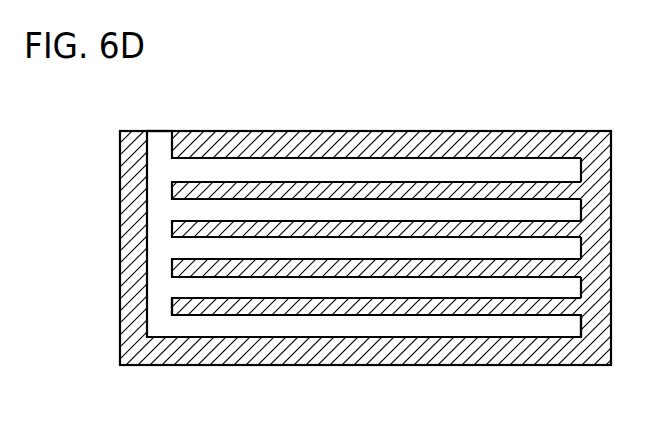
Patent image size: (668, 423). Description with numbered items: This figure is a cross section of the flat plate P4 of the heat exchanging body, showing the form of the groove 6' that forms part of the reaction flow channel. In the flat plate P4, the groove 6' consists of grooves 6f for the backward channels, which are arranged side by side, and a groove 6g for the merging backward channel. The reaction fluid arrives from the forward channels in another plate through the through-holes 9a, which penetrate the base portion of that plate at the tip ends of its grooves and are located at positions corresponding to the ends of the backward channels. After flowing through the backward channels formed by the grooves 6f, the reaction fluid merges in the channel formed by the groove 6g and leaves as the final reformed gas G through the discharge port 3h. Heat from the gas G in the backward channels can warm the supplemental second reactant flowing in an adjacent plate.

The groove 6' is at (334, 199).
The discharge port 3h is at (152, 131).
The final reformed gas G is at (160, 131).
The groove for backward channel 6g is at (172, 131).
The grooves for backward channels 6f is at (303, 327).
The through-holes 9a is at (11, 322).
The flat plate P4 is at (560, 131).